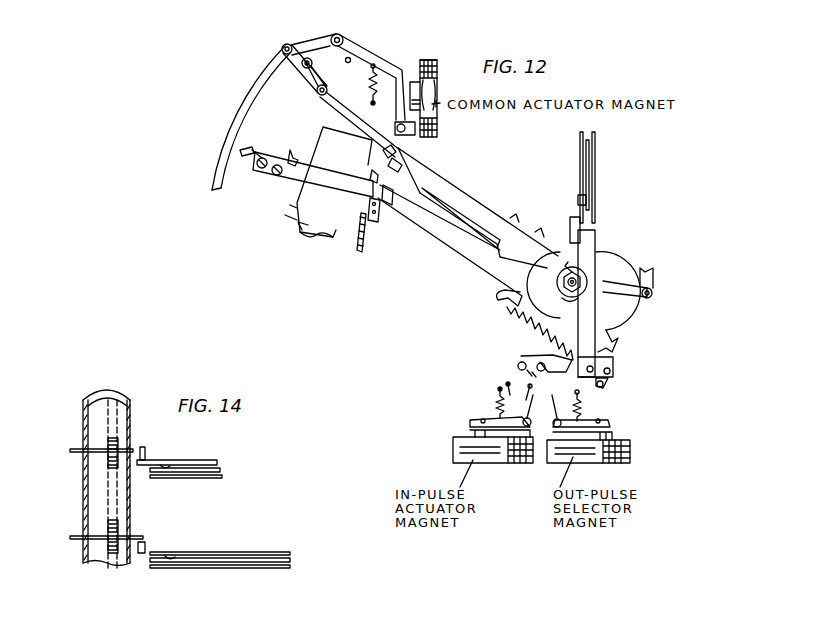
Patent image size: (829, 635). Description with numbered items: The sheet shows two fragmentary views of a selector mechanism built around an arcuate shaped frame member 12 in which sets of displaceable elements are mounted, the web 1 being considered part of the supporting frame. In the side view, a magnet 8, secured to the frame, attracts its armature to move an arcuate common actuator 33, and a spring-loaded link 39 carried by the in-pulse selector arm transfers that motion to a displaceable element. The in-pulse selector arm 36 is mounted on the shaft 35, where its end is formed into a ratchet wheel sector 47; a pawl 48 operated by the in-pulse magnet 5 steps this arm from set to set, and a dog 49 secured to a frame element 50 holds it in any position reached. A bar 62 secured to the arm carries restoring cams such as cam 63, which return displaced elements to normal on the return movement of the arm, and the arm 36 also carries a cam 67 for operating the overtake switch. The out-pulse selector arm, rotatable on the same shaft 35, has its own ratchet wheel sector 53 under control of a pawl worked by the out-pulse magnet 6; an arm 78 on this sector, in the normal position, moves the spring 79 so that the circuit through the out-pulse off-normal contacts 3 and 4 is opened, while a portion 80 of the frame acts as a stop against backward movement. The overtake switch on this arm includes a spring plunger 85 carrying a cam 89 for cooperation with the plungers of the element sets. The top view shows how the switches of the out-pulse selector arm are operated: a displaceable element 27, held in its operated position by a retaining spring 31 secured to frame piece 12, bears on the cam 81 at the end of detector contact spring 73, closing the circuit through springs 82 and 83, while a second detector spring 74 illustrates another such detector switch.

In FIG. 12, the web 1 is at (447, 187).
In FIG. 12, the out-pulse off-normal contact 3 is at (597, 148).
In FIG. 12, the out-pulse off-normal contact 4 is at (590, 165).
In FIG. 12, the in-pulse magnet 5 is at (487, 452).
In FIG. 12, the out-pulse magnet 6 is at (585, 453).
In FIG. 12, the magnet 8 is at (426, 62).
In FIG. 12, the arcuate shaped frame member 12 is at (320, 238).
In FIG. 14, the arcuate shaped frame member 12 is at (126, 400).
In FIG. 14, the displaceable element 27 is at (93, 537).
In FIG. 14, the spring 31 is at (120, 523).
In FIG. 12, the arcuate common actuator 33 is at (262, 97).
In FIG. 12, the shaft 35 is at (578, 278).
In FIG. 12, the in-pulse selector arm 36 is at (350, 176).
In FIG. 12, the link 39 is at (247, 155).
In FIG. 12, the ratchet wheel sector 47 is at (519, 314).
In FIG. 12, the pawl 48 is at (553, 355).
In FIG. 12, the dog 49 is at (605, 352).
In FIG. 12, the element 50 is at (614, 374).
In FIG. 12, the ratchet wheel sector 53 is at (513, 297).
In FIG. 12, the bar 62 is at (376, 222).
In FIG. 12, the cam 63 is at (352, 255).
In FIG. 12, the cam 67 is at (293, 155).
In FIG. 12, the detector contact spring 73 is at (399, 160).
In FIG. 14, the detector contact spring 73 is at (180, 556).
In FIG. 14, the detector contact spring 74 is at (180, 458).
In FIG. 12, the arm 78 is at (570, 226).
In FIG. 12, the spring 79 is at (580, 168).
In FIG. 12, the portion of the frame 80 is at (598, 232).
In FIG. 12, the cam 81 is at (393, 147).
In FIG. 14, the cam 81 is at (153, 553).
In FIG. 12, the spring 82 is at (402, 168).
In FIG. 14, the spring 82 is at (262, 562).
In FIG. 14, the spring 83 is at (220, 560).
In FIG. 12, the spring plunger 85 is at (390, 205).
In FIG. 12, the cam 89 is at (367, 184).